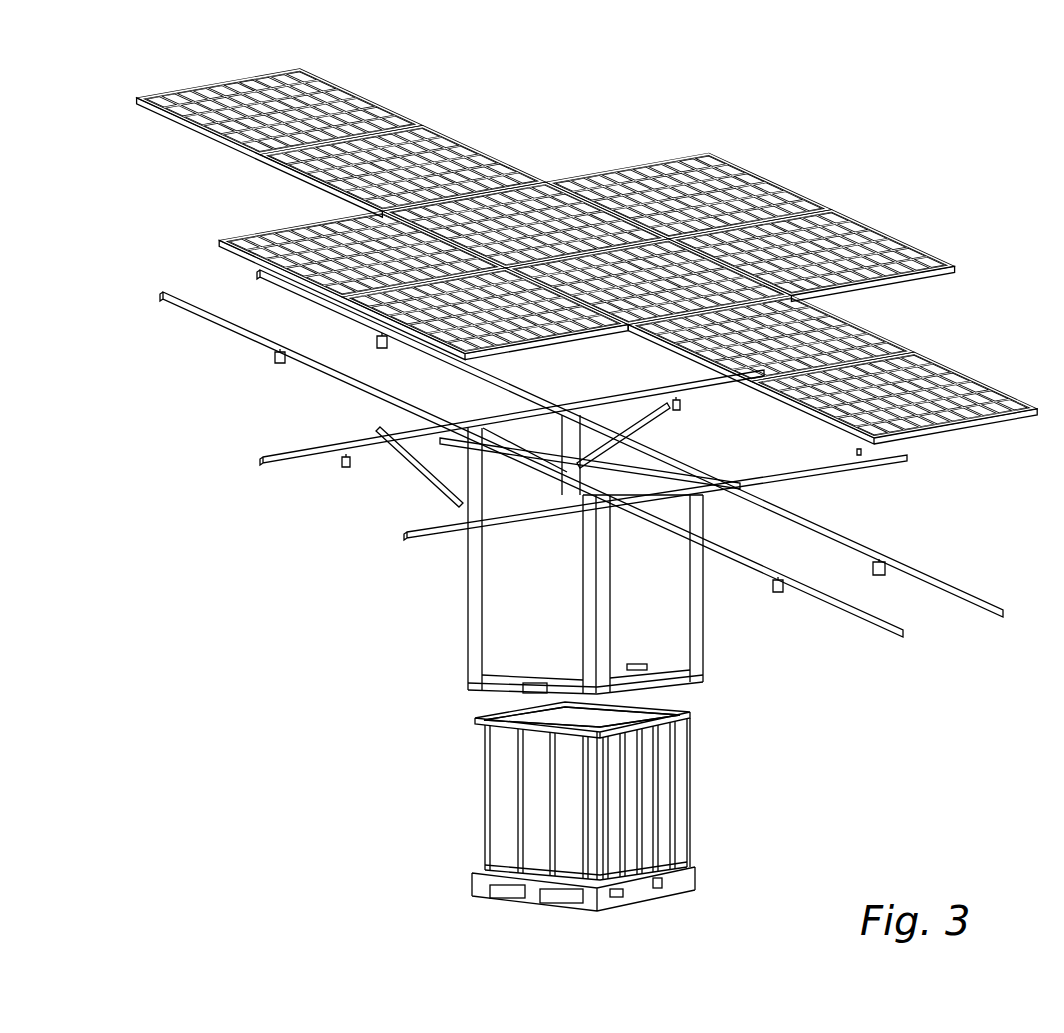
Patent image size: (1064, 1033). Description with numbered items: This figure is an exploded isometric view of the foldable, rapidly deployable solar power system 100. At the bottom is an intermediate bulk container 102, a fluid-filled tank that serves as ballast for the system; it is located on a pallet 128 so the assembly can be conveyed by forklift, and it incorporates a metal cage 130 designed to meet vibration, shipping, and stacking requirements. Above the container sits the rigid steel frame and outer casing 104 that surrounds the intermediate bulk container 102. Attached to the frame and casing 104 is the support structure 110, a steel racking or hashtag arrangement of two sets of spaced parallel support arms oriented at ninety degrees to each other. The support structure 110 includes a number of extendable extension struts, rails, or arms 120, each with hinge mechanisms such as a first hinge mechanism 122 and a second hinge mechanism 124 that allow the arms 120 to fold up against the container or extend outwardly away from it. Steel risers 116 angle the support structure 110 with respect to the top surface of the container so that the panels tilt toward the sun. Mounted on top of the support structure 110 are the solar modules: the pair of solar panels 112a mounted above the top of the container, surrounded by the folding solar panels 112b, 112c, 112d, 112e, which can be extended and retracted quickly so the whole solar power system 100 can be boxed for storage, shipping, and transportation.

The solar power system 100 is at (987, 150).
The intermediate bulk container 102 is at (690, 790).
The rigid steel frame and outer casing 104 is at (455, 590).
The support structure 110 is at (827, 515).
The solar panels 112a is at (647, 273).
The folding solar panel 112b is at (817, 233).
The folding solar panel 112c is at (927, 397).
The folding solar panel 112d is at (367, 280).
The folding solar panel 112e is at (433, 140).
The steel risers 116 is at (470, 467).
The arms 120 is at (340, 450).
The first hinge mechanism 122 is at (262, 358).
The second hinge mechanism 124 is at (457, 407).
The pallet 128 is at (695, 880).
The metal cage 130 is at (475, 718).